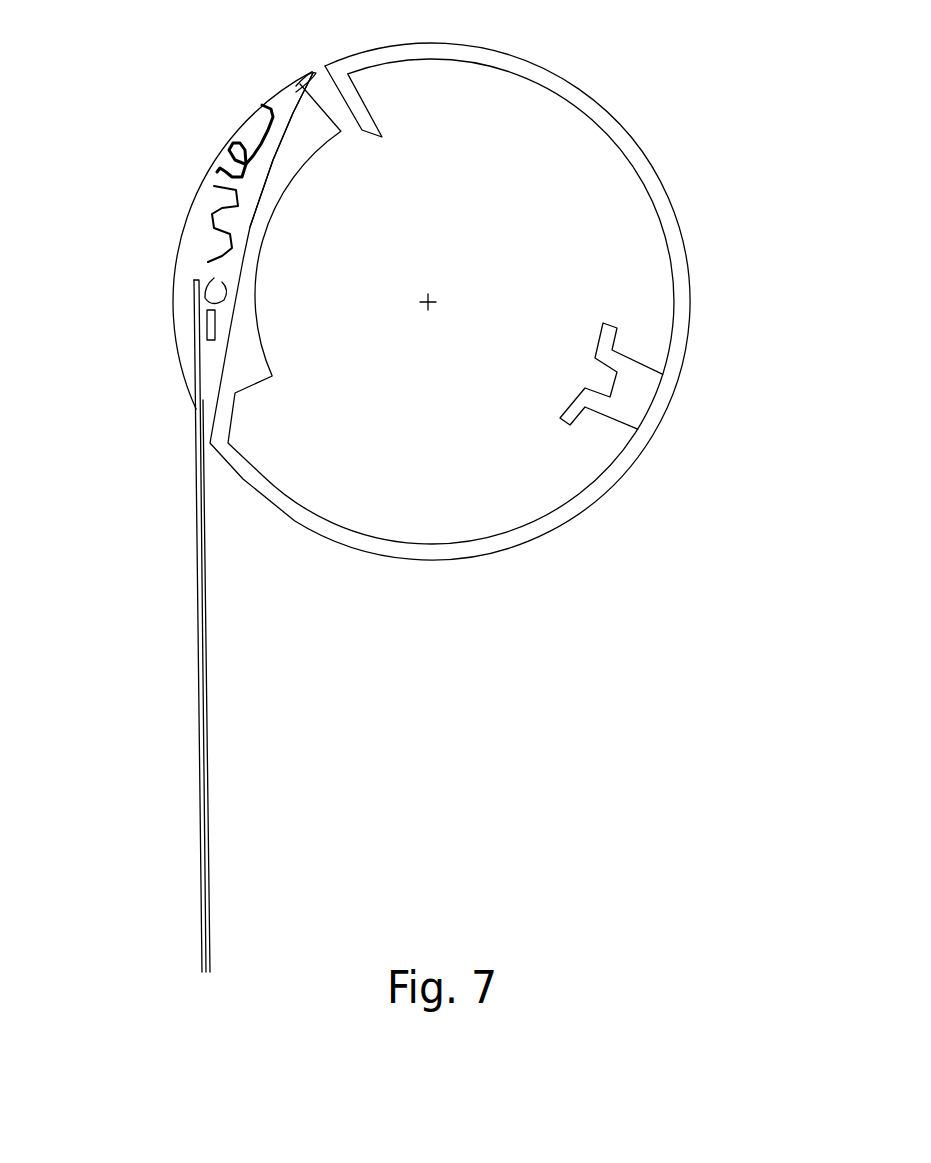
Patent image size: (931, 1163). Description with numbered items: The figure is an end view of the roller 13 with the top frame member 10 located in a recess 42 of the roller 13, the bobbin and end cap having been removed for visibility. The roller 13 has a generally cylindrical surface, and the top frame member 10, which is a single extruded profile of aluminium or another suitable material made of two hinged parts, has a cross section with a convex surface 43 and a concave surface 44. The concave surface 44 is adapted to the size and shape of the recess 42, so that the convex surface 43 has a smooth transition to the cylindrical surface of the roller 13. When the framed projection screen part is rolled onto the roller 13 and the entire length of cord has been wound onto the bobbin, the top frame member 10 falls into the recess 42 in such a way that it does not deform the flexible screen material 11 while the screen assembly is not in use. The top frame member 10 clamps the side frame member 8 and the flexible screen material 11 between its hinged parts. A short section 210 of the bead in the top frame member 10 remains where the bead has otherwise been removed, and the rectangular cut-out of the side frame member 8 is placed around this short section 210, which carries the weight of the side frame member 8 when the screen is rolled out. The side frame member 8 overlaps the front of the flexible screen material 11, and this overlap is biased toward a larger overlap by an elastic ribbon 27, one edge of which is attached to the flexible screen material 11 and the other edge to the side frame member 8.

The roller 13 is at (632, 138).
The recess 42 is at (311, 72).
The top frame member 10 is at (190, 208).
The convex surface 43 is at (176, 290).
The concave surface 44 is at (273, 160).
The flexible screen material 11 is at (202, 283).
The short section of the bead 210 is at (217, 311).
The elastic ribbon 27 is at (197, 527).
The side frame member 8 is at (207, 582).